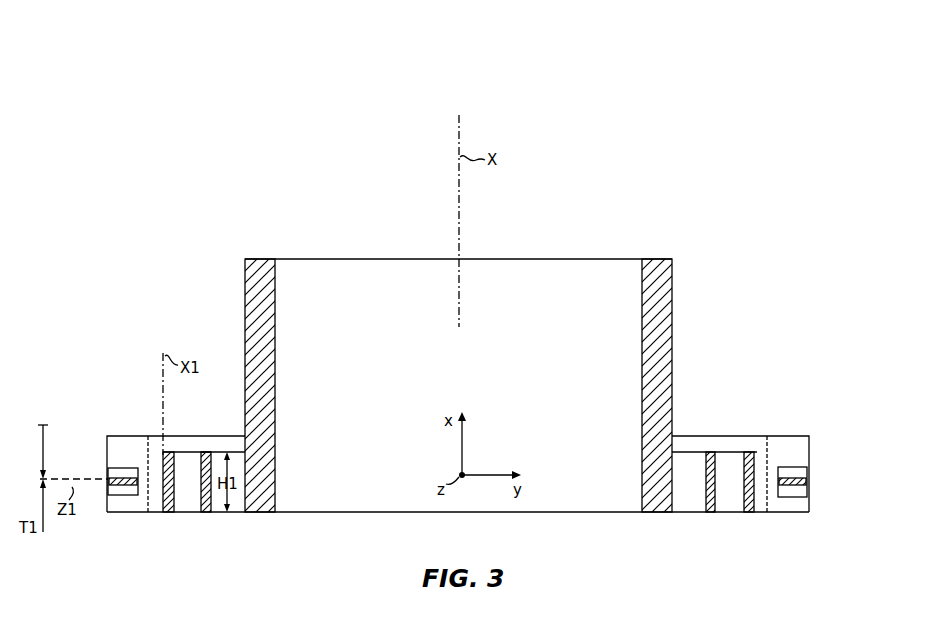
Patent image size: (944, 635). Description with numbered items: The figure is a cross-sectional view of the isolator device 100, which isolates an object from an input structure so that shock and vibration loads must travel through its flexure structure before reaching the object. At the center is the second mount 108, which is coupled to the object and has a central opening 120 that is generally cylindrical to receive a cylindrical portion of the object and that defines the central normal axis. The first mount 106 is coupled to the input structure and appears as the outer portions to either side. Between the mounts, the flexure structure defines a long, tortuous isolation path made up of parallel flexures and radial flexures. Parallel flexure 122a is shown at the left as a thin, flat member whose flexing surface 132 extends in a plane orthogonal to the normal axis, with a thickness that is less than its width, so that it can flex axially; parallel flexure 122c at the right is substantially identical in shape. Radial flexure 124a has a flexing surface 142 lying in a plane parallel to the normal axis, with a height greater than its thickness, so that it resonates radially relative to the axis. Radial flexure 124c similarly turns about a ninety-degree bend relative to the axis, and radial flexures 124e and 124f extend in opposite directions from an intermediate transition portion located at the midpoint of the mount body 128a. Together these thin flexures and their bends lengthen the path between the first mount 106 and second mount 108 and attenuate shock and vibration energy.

The isolator device 100 is at (342, 88).
The second mount 108 is at (664, 277).
The central opening 120 is at (592, 288).
The first mount 106 is at (116, 430).
The mount body 128a is at (112, 457).
The parallel flexure 122a is at (110, 486).
The flexing surface 132 is at (121, 468).
The radial flexure 124a is at (179, 490).
The radial flexure 124f is at (221, 449).
The flexing surface 142 is at (157, 506).
The radial flexure 124e is at (692, 484).
The radial flexure 124c is at (753, 494).
The parallel flexure 122c is at (808, 484).